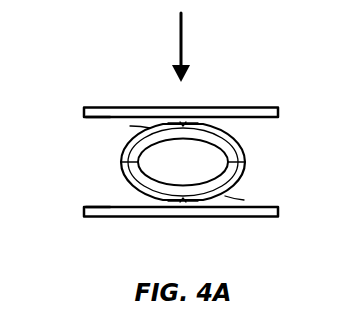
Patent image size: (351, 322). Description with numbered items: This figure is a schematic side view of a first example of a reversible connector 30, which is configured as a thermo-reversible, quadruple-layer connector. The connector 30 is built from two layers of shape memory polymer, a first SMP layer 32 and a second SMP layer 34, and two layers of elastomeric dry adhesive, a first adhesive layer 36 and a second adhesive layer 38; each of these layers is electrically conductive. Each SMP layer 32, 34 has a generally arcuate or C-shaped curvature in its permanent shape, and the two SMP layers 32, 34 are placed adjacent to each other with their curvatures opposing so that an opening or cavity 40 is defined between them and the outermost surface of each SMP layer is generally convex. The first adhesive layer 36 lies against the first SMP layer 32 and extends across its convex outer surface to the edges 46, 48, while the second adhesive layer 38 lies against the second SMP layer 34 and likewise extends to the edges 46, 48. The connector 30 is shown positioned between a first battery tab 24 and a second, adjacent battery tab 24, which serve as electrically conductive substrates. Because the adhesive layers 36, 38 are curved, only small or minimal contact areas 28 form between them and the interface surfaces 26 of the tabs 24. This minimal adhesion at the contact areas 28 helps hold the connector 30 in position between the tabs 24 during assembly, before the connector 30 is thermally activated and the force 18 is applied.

The force 18 is at (181, 31).
The battery tab 24 is at (103, 107).
The interface surface 26 is at (92, 121).
The contact area 28 is at (193, 122).
The reversible connector 30 is at (281, 130).
The first SMP layer 32 is at (166, 121).
The second SMP layer 34 is at (164, 201).
The first adhesive layer 36 is at (130, 126).
The second adhesive layer 38 is at (244, 200).
The cavity 40 is at (174, 170).
The edge 46 is at (122, 163).
The edge 48 is at (244, 162).